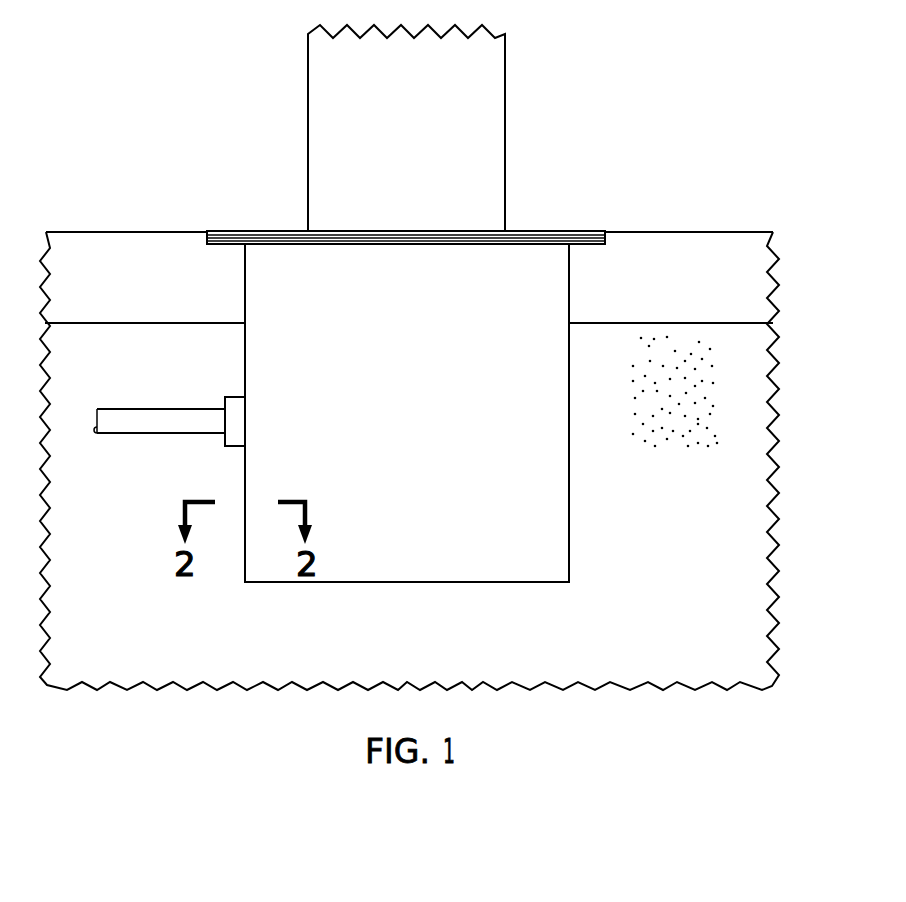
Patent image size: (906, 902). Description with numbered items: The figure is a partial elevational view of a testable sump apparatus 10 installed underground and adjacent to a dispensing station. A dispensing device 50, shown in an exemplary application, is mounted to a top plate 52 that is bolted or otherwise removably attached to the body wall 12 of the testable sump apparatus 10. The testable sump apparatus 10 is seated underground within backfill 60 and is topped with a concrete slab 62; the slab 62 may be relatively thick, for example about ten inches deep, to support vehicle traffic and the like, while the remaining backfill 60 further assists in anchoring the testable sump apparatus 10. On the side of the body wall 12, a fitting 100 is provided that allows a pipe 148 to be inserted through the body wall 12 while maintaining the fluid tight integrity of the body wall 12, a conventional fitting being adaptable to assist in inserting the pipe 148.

The testable sump apparatus 10 is at (161, 455).
The body wall 12 is at (358, 413).
The dispensing device 50 is at (457, 128).
The top plate 52 is at (560, 232).
The backfill 60 is at (740, 352).
The concrete slab 62 is at (744, 232).
The fitting 100 is at (200, 385).
The pipe 148 is at (150, 409).